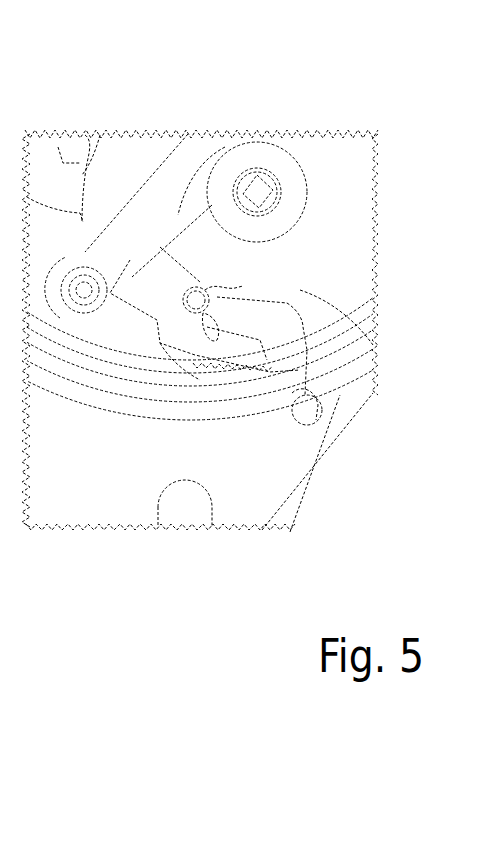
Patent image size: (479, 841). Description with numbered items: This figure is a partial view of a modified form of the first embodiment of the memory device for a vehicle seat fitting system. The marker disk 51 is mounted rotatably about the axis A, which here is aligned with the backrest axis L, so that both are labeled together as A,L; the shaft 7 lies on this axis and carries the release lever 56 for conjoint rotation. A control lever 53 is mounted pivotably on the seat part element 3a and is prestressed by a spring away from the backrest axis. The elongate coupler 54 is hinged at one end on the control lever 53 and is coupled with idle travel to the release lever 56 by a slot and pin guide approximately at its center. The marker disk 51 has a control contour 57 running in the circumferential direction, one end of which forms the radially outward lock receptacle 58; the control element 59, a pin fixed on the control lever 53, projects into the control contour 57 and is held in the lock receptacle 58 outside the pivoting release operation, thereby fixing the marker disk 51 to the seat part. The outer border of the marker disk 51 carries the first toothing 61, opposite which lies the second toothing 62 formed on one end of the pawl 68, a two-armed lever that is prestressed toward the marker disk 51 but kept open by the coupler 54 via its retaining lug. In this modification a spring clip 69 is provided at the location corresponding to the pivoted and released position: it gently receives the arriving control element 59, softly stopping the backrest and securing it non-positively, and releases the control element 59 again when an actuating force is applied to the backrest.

The seat part element 3a is at (247, 500).
The shaft 7 is at (270, 208).
The marker disk 51 is at (347, 295).
The control lever 53 is at (237, 380).
The coupler 54 is at (160, 198).
The release lever 56 is at (225, 153).
The control contour 57 is at (160, 255).
The lock receptacle 58 is at (292, 350).
The control element 59 is at (193, 307).
The first toothing 61 is at (82, 197).
The second toothing 62 is at (63, 185).
The pawl 68 is at (40, 165).
The spring clip 69 is at (182, 305).
The axis A and backrest axis L A,L is at (258, 192).